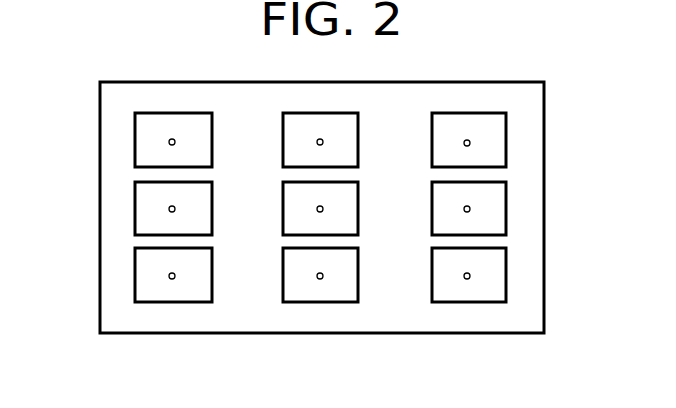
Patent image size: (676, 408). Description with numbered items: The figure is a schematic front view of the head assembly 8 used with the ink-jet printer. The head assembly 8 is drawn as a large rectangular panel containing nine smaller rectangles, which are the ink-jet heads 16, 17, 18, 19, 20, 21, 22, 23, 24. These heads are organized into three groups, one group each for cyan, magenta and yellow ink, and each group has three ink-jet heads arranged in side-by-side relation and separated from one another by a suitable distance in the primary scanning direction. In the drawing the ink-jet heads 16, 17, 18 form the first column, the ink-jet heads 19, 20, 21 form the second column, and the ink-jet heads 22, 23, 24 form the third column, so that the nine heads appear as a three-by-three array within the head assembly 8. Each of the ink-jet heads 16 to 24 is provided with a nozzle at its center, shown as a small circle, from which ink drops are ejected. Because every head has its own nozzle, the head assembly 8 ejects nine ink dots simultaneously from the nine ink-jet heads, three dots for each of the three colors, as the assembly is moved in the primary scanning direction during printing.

The head assembly 8 is at (98, 105).
The ink-jet head 16 is at (147, 143).
The ink-jet head 17 is at (147, 207).
The ink-jet head 18 is at (147, 277).
The ink-jet head 19 is at (294, 137).
The ink-jet head 20 is at (297, 205).
The ink-jet head 21 is at (294, 278).
The ink-jet head 22 is at (498, 138).
The ink-jet head 23 is at (498, 213).
The ink-jet head 24 is at (498, 280).